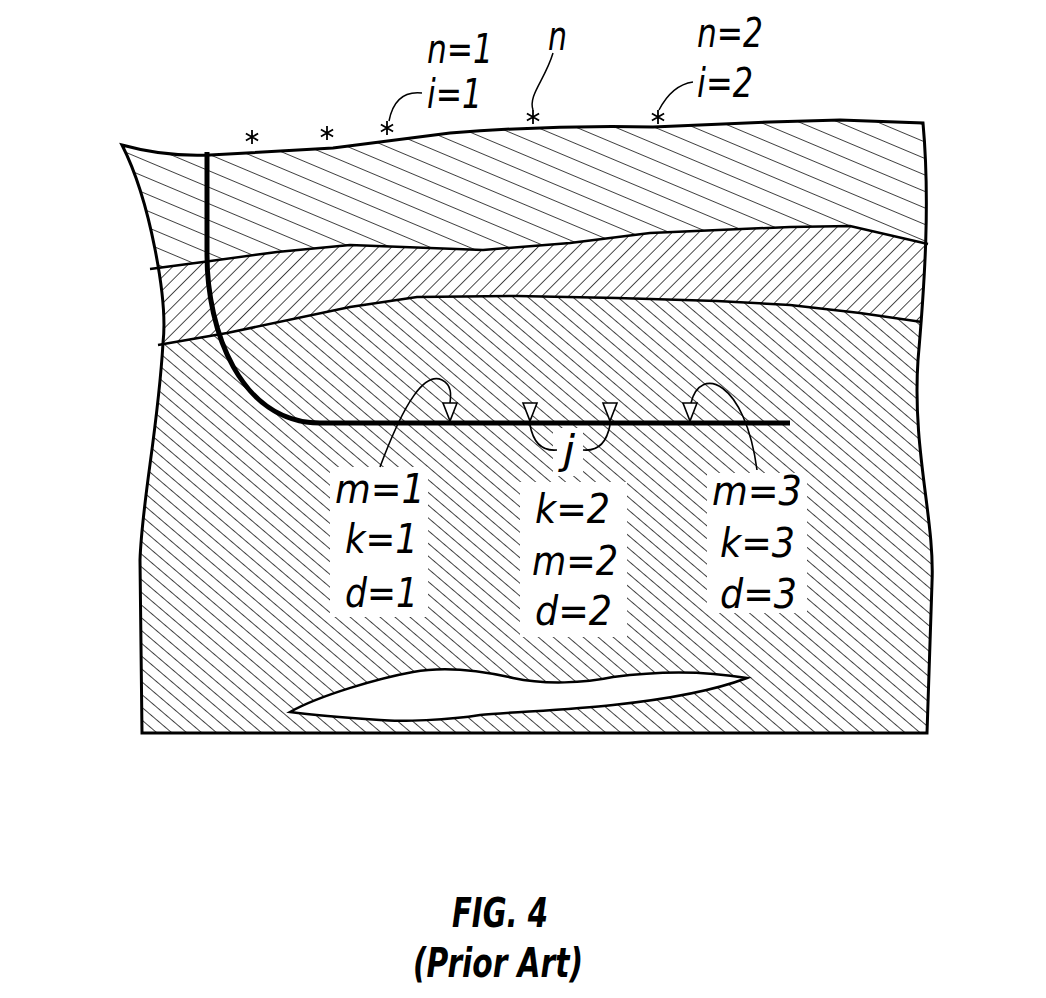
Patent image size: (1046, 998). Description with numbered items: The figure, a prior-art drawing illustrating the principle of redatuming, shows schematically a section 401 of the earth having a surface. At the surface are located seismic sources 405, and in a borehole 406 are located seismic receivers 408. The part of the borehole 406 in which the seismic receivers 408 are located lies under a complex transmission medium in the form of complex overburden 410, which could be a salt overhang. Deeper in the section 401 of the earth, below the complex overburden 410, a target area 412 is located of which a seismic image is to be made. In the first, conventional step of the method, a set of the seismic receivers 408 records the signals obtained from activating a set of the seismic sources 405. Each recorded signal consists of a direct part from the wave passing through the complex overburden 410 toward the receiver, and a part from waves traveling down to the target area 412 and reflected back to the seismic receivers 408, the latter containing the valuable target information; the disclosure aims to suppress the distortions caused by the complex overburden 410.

The section of the earth 401 is at (652, 750).
The seismic sources 405 is at (387, 121).
The borehole 406 is at (207, 172).
The seismic receivers 408 is at (688, 402).
The complex overburden 410 is at (568, 287).
The target area 412 is at (427, 698).